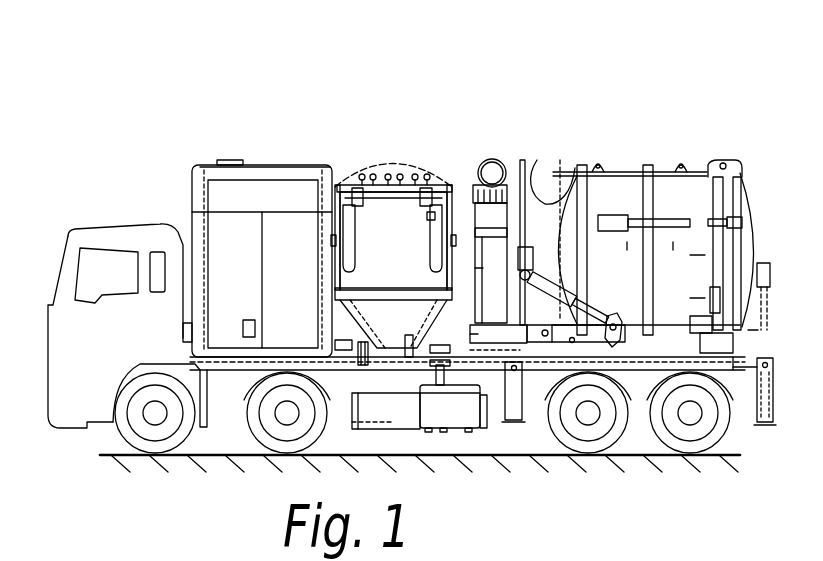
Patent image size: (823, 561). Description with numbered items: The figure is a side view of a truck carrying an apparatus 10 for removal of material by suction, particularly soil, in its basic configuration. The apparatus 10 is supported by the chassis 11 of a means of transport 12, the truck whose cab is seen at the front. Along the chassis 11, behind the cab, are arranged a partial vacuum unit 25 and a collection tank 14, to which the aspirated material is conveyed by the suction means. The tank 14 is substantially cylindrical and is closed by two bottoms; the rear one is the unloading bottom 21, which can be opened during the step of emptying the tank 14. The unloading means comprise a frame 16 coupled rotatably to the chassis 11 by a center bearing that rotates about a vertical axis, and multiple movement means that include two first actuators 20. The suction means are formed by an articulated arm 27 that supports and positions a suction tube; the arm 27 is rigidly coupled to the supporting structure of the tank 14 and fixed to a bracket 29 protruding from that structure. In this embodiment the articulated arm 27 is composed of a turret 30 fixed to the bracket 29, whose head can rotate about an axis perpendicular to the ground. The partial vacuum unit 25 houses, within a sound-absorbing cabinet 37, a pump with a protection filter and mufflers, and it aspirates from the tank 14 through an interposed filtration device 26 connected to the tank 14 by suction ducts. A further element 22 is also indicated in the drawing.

The apparatus for removal of material by suction 10 is at (518, 102).
The chassis 11 is at (467, 367).
The means of transport 12 is at (95, 216).
The collection tank 14 is at (621, 164).
The frame 16 is at (539, 356).
The first actuators 20 is at (688, 355).
The unloading bottom 21 is at (752, 243).
The pivot frame 22 is at (543, 181).
The partial vacuum unit 25 is at (262, 158).
The filtration device 26 is at (364, 158).
The articulated arm 27 is at (461, 178).
The bracket 29 is at (473, 334).
The turret 30 is at (483, 268).
The sound-absorbing cabinet 37 is at (233, 243).